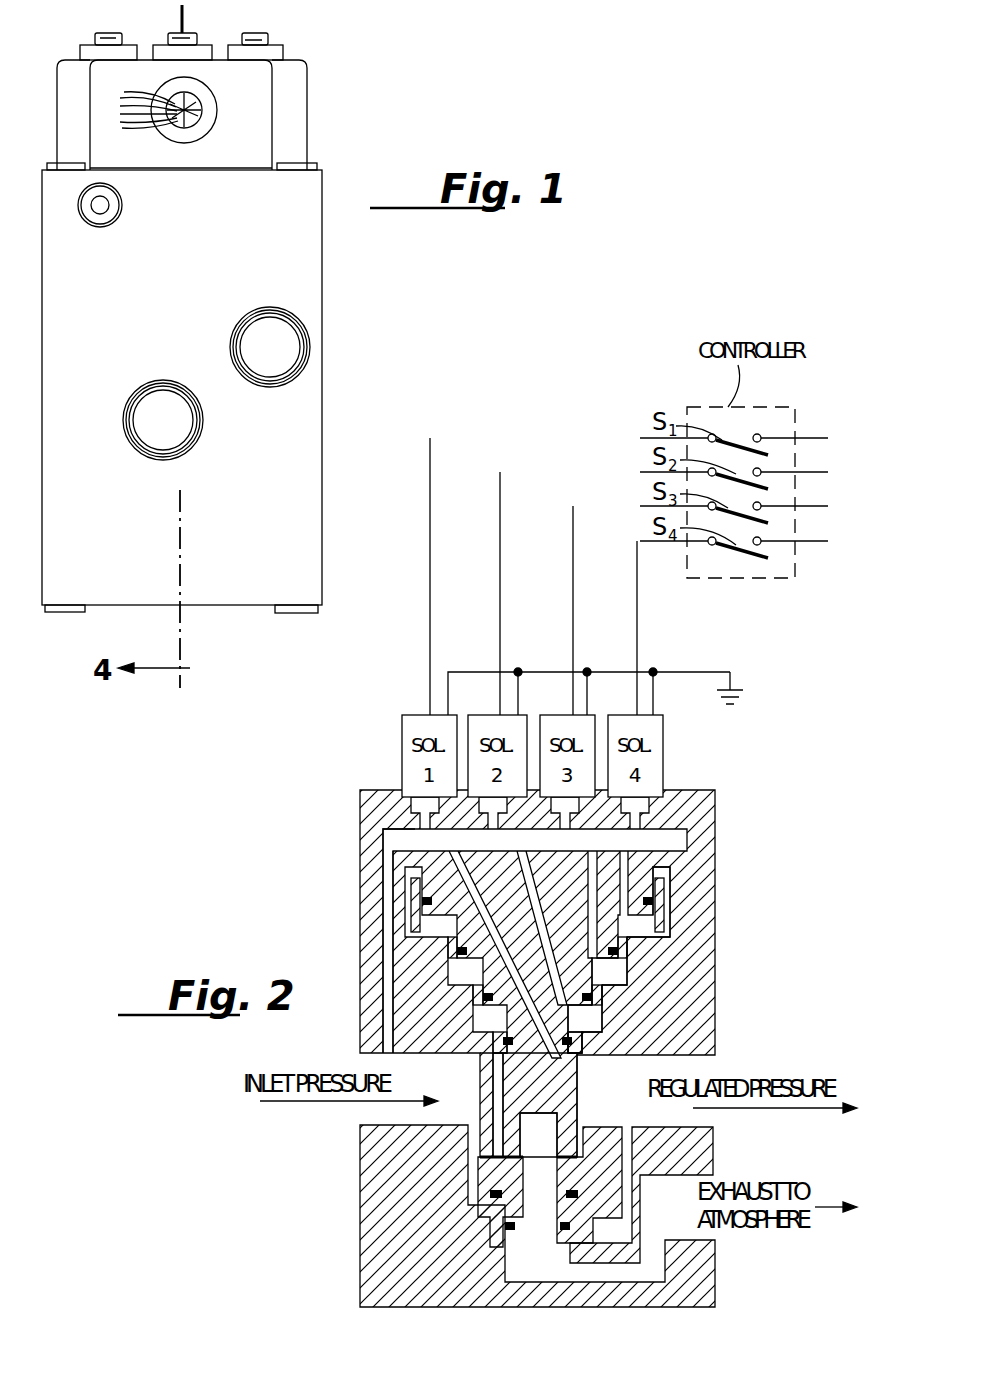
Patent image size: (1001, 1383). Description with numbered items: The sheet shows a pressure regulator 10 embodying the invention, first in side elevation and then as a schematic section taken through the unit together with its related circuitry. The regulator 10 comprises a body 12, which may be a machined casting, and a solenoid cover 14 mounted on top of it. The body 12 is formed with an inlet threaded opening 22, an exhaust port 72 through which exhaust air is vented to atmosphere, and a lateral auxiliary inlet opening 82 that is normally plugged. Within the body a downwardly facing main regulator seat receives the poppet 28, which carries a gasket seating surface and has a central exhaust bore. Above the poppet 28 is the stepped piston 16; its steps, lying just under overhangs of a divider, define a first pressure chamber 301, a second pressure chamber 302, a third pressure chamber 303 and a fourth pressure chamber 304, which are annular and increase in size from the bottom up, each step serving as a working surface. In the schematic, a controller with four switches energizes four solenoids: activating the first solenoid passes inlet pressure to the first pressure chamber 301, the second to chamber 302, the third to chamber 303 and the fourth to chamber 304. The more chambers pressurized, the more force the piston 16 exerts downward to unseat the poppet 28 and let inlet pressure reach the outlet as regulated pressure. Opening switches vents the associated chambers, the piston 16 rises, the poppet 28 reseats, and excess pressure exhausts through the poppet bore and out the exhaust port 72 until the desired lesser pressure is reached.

In FIG. 1, the regulator 10 is at (364, 284).
In FIG. 1, the body 12 is at (326, 413).
In FIG. 1, the solenoid cover 14 is at (307, 88).
In FIG. 1, the lateral auxiliary inlet opening 82 is at (121, 204).
In FIG. 2, the lateral auxiliary inlet opening 82 is at (383, 838).
In FIG. 1, the exhaust port 72 is at (270, 347).
In FIG. 1, the inlet threaded opening 22 is at (163, 420).
In FIG. 2, the piston 16 is at (584, 1099).
In FIG. 2, the poppet 28 is at (533, 1155).
In FIG. 2, the first pressure chamber 301 is at (574, 1060).
In FIG. 2, the second pressure chamber 302 is at (586, 1016).
In FIG. 2, the third pressure chamber 303 is at (611, 968).
In FIG. 2, the fourth pressure chamber 304 is at (649, 922).